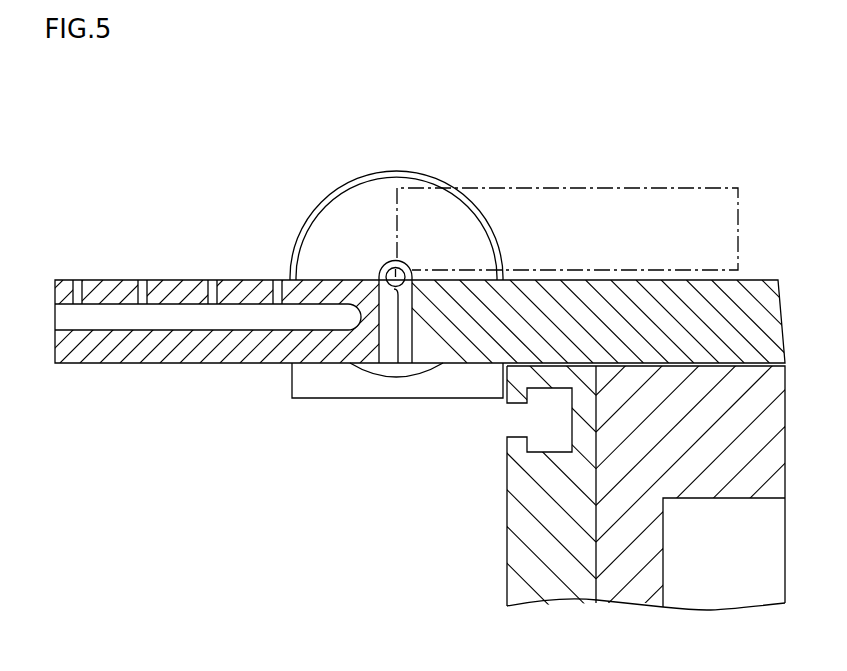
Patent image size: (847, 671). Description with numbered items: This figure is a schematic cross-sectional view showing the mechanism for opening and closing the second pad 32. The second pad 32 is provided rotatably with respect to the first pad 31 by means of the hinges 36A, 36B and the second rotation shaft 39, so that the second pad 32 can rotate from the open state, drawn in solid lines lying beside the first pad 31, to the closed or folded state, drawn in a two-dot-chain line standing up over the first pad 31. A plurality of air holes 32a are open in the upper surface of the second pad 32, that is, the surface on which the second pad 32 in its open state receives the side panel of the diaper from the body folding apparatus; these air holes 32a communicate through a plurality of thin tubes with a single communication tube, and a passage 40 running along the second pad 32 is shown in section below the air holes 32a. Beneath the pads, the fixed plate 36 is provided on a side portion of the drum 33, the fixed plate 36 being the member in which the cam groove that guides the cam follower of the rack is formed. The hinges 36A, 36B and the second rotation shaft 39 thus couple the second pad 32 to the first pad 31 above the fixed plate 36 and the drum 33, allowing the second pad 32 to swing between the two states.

The first pad 31 is at (633, 300).
The second pad 32 is at (558, 188).
The air holes 32a is at (143, 280).
The drum 33 is at (635, 588).
The fixed plate 36 is at (527, 540).
The hinge 36A is at (407, 267).
The hinge 36B is at (383, 275).
The second rotation shaft 39 is at (391, 266).
The slot 40 is at (75, 325).